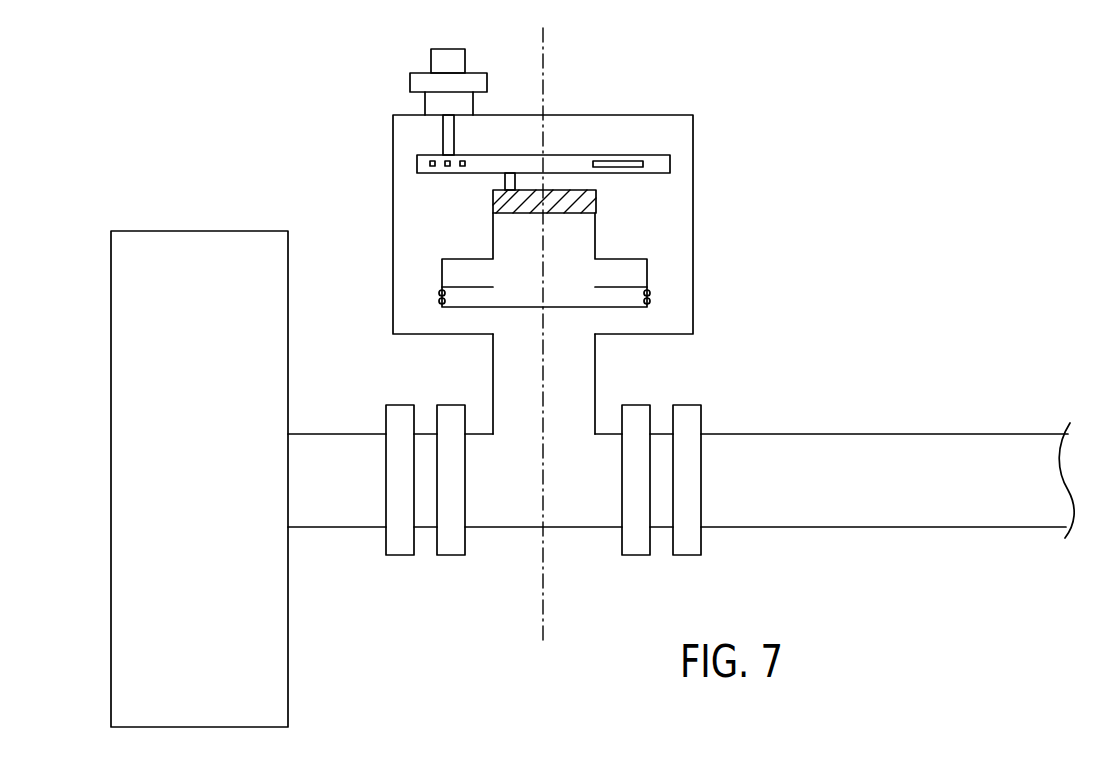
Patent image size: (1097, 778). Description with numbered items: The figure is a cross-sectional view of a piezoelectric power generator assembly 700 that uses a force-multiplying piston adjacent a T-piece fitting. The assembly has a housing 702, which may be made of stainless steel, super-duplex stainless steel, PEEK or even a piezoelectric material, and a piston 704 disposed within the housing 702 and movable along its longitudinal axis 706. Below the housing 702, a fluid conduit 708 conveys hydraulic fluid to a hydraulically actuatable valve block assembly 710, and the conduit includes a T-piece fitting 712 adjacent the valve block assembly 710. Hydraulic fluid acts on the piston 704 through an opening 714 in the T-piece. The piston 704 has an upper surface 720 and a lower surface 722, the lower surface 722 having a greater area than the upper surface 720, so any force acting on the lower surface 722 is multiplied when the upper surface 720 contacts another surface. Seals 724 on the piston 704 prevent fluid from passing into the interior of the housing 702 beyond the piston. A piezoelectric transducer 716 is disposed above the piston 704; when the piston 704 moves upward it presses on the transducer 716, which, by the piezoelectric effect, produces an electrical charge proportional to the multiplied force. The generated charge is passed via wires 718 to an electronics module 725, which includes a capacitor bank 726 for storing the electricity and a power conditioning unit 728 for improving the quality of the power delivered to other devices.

The piezoelectric power generator assembly 700 is at (862, 270).
The housing 702 is at (671, 246).
The piston 704 is at (537, 299).
The longitudinal axis 706 is at (545, 63).
The fluid conduit 708 is at (885, 434).
The hydraulically actuatable valve block assembly 710 is at (215, 310).
The T-piece fitting 712 is at (595, 385).
The opening 714 is at (495, 360).
The piezoelectric transducer 716 is at (505, 197).
The wires 718 is at (505, 182).
The upper surface 720 is at (583, 190).
The lower surface 722 is at (612, 307).
The seals 724 is at (442, 300).
The electronics module 725 is at (570, 155).
The capacitor bank 726 is at (433, 157).
The power conditioning unit 728 is at (618, 157).